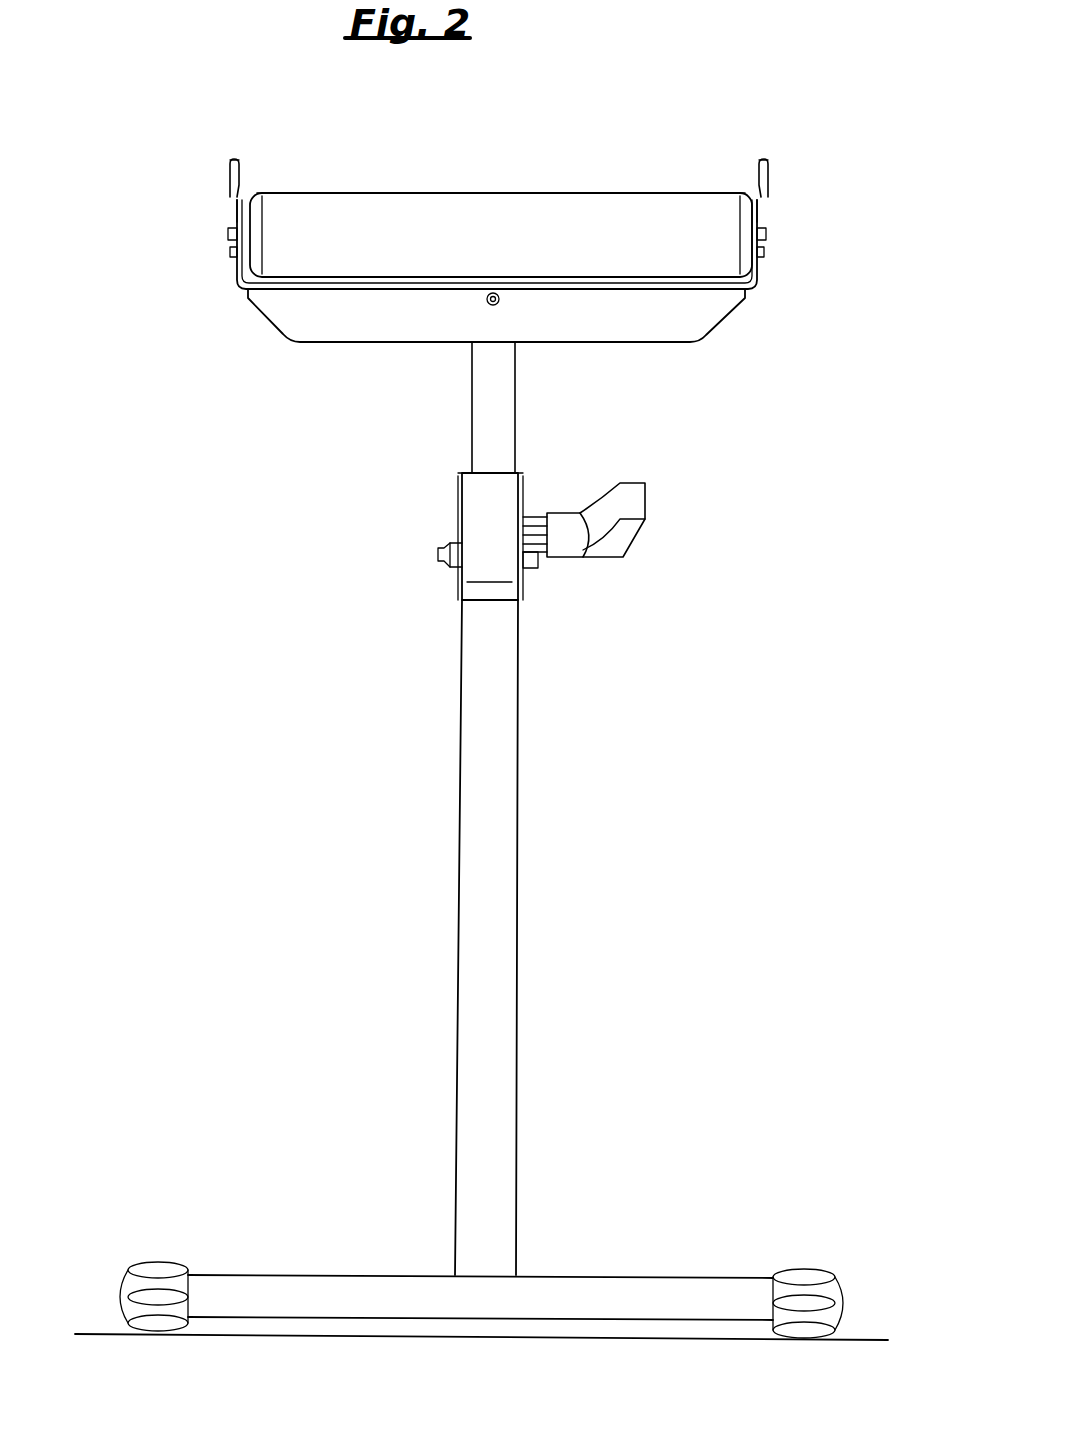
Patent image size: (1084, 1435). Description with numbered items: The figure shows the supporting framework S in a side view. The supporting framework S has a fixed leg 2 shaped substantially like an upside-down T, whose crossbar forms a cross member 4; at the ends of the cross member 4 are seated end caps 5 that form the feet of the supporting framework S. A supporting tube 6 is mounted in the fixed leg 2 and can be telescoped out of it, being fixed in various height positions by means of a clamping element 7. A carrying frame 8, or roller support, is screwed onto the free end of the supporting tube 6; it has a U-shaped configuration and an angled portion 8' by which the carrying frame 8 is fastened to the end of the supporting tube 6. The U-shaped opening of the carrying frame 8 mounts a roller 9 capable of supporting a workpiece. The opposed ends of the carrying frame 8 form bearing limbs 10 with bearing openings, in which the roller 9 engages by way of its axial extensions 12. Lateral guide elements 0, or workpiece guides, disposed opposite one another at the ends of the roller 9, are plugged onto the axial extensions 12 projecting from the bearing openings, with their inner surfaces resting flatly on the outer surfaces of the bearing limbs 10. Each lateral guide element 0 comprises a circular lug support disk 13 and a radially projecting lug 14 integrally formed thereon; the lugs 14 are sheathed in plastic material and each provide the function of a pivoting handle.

The supporting framework S is at (590, 172).
The fixed leg 2 is at (502, 847).
The cross member 4 is at (663, 1290).
The end caps 5 is at (148, 1285).
The supporting tube 6 is at (502, 397).
The clamping element 7 is at (610, 556).
The carrying frame 8 is at (408, 268).
The angled portion 8' is at (496, 365).
The roller 9 is at (363, 199).
The bearing limbs 10 is at (232, 272).
The axial extensions 12 is at (232, 236).
The lug support disk 13 is at (235, 212).
The lug 14 is at (239, 182).
The lateral guide element 0 is at (230, 162).